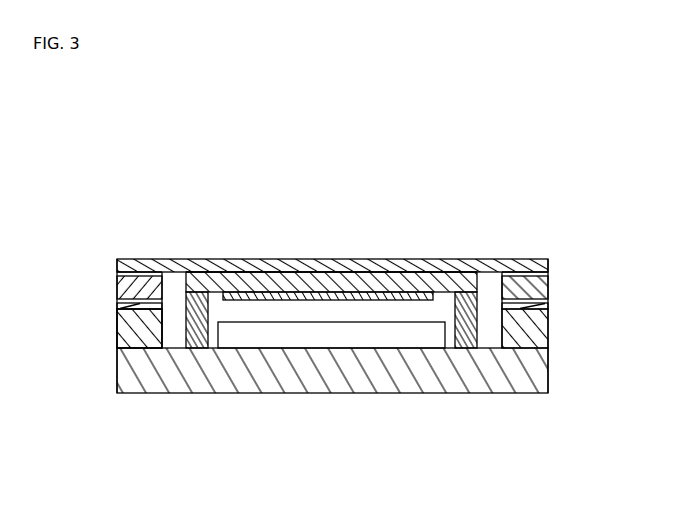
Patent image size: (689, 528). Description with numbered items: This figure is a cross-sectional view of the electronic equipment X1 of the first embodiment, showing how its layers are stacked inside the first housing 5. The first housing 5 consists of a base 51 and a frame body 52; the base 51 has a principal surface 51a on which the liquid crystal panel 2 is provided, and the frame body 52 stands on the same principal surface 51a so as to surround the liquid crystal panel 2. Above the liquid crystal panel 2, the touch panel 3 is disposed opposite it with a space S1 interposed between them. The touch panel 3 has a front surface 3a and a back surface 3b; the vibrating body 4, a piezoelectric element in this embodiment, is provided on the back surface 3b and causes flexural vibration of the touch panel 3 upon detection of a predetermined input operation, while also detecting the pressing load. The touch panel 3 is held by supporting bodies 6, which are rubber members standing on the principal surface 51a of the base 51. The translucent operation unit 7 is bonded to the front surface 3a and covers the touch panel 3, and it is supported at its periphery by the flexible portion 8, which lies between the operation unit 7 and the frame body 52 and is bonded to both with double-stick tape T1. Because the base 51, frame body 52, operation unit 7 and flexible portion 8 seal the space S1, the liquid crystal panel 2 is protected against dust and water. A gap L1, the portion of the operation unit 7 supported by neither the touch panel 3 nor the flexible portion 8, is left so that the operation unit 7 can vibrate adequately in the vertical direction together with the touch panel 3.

The electronic equipment X1 is at (528, 101).
The liquid crystal panel 2 is at (318, 333).
The touch panel 3 is at (331, 244).
The front surface 3a is at (340, 288).
The back surface 3b is at (374, 300).
The vibrating body 4 is at (350, 298).
The first housing 5 is at (328, 408).
The base 51 is at (168, 347).
The principal surface 51a is at (200, 343).
The frame body 52 is at (117, 333).
The supporting body 6 is at (207, 261).
The operation unit 7 is at (243, 259).
The flexible portion 8 is at (117, 297).
The space S1 is at (418, 310).
The double-stick tape T1 is at (117, 260).
The gap L1 is at (186, 270).